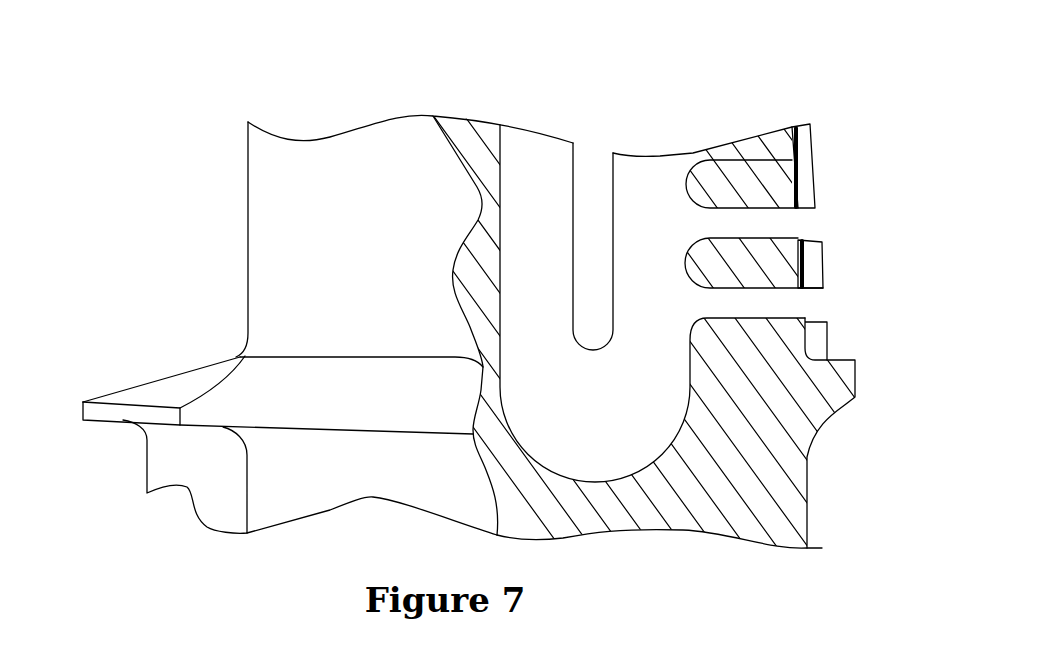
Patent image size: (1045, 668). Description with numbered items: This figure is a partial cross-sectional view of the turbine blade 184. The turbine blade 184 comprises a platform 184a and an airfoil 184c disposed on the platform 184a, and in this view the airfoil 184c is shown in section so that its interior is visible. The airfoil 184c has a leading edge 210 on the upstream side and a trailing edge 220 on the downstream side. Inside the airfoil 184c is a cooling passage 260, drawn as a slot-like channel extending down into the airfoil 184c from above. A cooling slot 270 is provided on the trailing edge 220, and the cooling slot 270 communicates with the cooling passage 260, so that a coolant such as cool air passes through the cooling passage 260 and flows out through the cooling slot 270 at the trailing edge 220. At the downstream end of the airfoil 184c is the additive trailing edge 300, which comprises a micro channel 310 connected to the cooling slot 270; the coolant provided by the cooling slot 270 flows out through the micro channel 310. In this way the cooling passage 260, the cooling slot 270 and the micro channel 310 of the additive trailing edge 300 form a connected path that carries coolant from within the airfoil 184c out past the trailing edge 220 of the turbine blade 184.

The turbine blade 184 is at (57, 57).
The platform 184a is at (164, 381).
The airfoil 184c is at (197, 135).
The leading edge 210 is at (243, 169).
The cooling passage 260 is at (535, 159).
The trailing edge 220 is at (788, 173).
The cooling slot 270 is at (781, 216).
The additive trailing edge 300 is at (815, 180).
The micro channel 310 is at (827, 230).